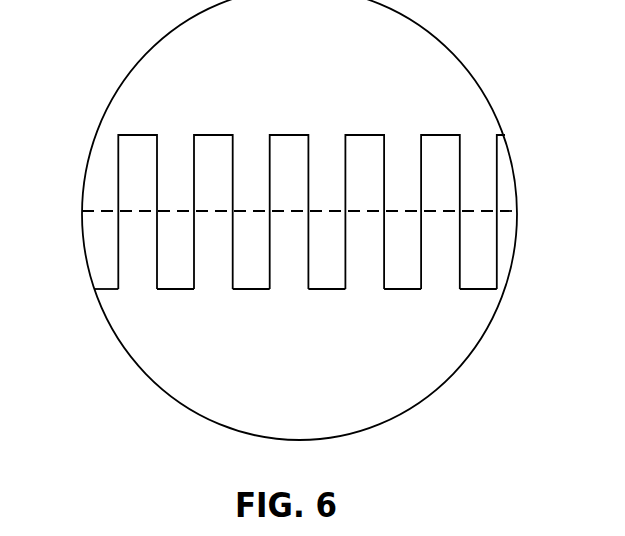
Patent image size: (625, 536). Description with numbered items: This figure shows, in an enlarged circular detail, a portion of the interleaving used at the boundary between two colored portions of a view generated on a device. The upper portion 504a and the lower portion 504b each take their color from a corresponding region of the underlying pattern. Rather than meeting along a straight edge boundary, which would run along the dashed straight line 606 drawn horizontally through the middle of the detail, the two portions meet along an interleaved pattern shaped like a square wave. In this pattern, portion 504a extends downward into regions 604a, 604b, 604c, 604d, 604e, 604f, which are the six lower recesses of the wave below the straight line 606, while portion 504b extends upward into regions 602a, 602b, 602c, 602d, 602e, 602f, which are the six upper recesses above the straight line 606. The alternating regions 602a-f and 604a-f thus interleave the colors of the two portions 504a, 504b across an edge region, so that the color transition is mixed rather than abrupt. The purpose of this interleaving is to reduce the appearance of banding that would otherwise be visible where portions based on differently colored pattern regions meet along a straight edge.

The portion 504a is at (318, 28).
The portion 504b is at (325, 426).
The region 602a is at (137, 157).
The region 602b is at (218, 150).
The region 602c is at (291, 150).
The region 602d is at (366, 150).
The region 602e is at (442, 148).
The region 602f is at (505, 178).
The region 604a is at (95, 260).
The region 604b is at (175, 260).
The region 604c is at (245, 260).
The region 604d is at (328, 257).
The region 604e is at (398, 257).
The region 604f is at (480, 257).
The straight line 606 is at (508, 210).